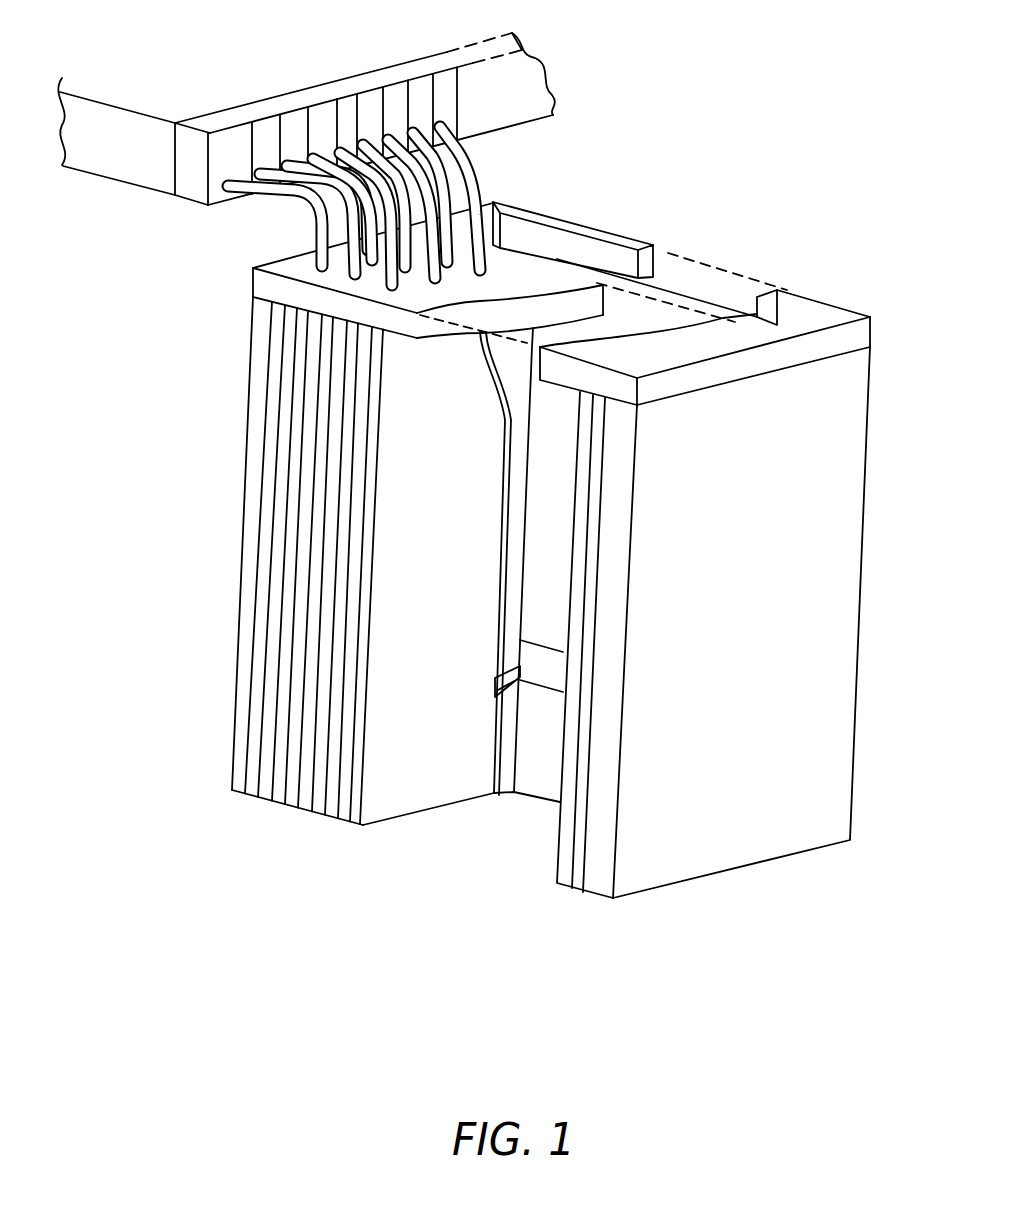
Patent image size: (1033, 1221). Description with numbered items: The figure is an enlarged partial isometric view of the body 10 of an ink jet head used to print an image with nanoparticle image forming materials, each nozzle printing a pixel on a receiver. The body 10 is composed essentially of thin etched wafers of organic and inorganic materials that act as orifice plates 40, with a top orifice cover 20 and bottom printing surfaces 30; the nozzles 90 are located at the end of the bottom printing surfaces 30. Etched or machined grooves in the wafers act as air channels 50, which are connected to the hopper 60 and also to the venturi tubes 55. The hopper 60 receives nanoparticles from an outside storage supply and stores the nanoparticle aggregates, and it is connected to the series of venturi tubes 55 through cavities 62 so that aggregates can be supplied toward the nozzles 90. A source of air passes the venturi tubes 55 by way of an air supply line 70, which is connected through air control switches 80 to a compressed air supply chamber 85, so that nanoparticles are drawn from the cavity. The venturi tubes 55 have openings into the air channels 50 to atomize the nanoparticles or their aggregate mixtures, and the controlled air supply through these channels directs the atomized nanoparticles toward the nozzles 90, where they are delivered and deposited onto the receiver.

The body 10 is at (835, 612).
The top orifice cover 20 is at (533, 273).
The bottom printing surfaces 30 is at (280, 807).
The orifice plates 40 is at (400, 793).
The air channels 50 is at (503, 410).
The venturi tubes 55 is at (517, 700).
The hopper 60 is at (627, 260).
The cavities 62 is at (547, 593).
The air supply line 70 is at (470, 168).
The air control switches 80 is at (217, 190).
The compressed air supply chamber 85 is at (197, 57).
The nozzles 90 is at (493, 781).